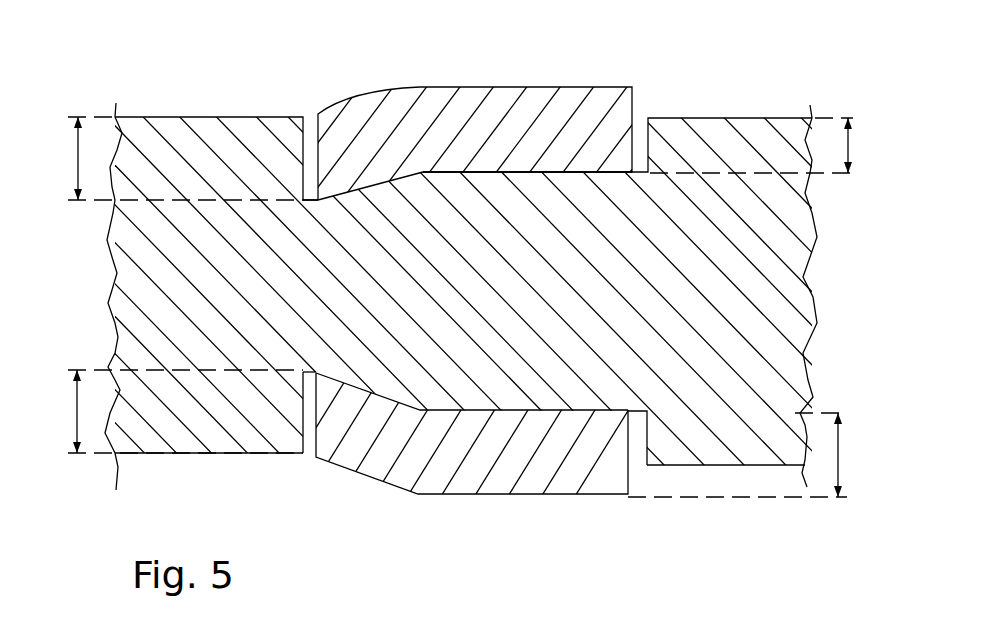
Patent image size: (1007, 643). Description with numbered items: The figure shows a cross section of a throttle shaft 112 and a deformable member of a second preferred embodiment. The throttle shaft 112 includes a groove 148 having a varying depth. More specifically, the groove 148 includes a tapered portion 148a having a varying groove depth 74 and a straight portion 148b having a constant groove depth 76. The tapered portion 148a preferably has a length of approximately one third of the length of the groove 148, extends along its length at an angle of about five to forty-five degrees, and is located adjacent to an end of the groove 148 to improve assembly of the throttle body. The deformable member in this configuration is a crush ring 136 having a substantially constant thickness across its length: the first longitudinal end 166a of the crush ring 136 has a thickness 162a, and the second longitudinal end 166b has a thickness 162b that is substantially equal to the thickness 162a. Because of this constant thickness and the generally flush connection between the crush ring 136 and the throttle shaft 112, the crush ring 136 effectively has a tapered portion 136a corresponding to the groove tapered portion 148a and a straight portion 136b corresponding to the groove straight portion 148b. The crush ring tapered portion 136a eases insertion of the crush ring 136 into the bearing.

The varying groove depth 74 is at (77, 152).
The constant groove depth 76 is at (849, 146).
The throttle shaft 112 is at (720, 118).
The crush ring 136 is at (500, 496).
The crush ring tapered portion 136a is at (365, 98).
The crush ring straight portion 136b is at (602, 88).
The groove 148 is at (503, 414).
The groove tapered portion 148a is at (360, 190).
The groove straight portion 148b is at (518, 168).
The thickness of first longitudinal end 162a is at (74, 415).
The thickness of second longitudinal end 162b is at (840, 450).
The first longitudinal end 166a is at (301, 450).
The second longitudinal end 166b is at (631, 467).